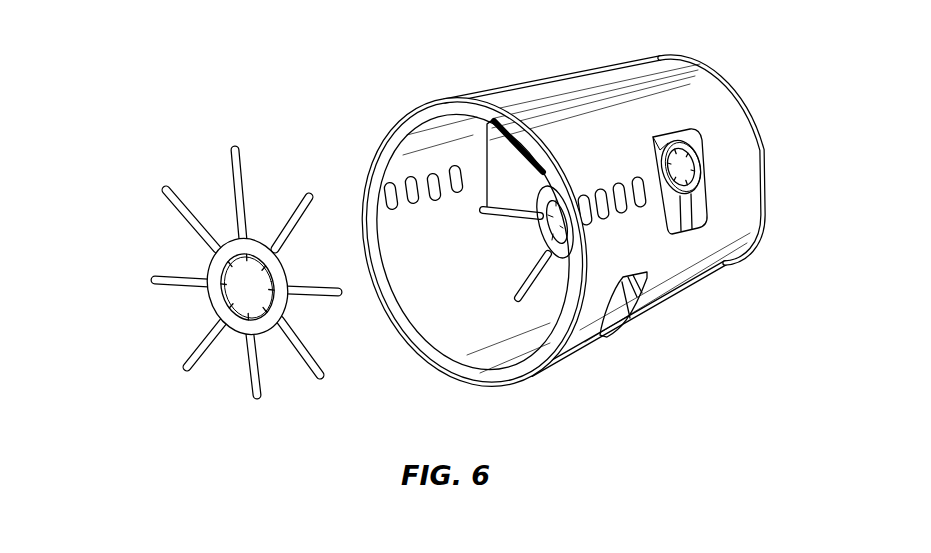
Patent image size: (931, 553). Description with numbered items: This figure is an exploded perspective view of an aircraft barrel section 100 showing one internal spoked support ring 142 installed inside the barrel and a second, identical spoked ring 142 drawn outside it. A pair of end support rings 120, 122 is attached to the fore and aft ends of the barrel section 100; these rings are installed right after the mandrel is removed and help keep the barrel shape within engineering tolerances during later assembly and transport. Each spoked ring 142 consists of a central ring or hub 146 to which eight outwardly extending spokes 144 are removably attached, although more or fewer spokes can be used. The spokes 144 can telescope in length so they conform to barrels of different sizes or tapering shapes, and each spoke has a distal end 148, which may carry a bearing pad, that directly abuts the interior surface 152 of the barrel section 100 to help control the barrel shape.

The barrel section 100 is at (617, 189).
The end support ring 120 is at (465, 242).
The end support ring 122 is at (761, 126).
The spoked ring 142 is at (323, 268).
The spoke 144 is at (177, 293).
The central ring or hub 146 is at (213, 272).
The distal end 148 is at (233, 172).
The interior surface 152 is at (391, 259).